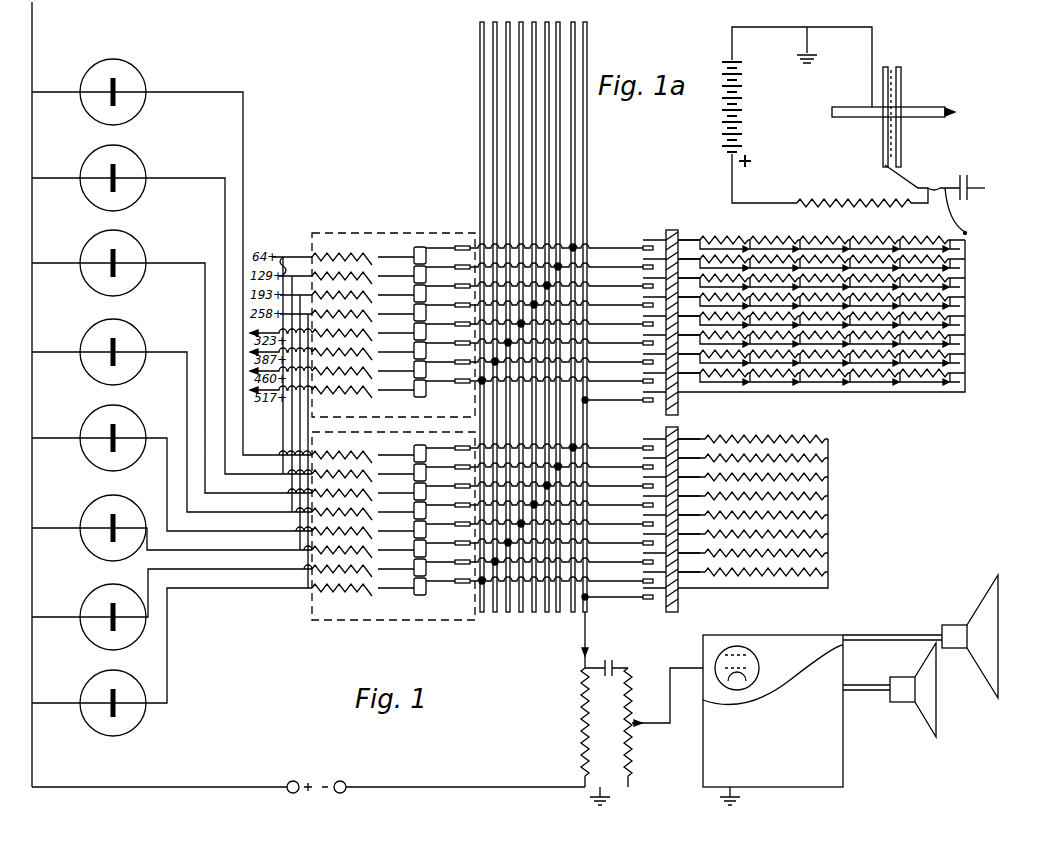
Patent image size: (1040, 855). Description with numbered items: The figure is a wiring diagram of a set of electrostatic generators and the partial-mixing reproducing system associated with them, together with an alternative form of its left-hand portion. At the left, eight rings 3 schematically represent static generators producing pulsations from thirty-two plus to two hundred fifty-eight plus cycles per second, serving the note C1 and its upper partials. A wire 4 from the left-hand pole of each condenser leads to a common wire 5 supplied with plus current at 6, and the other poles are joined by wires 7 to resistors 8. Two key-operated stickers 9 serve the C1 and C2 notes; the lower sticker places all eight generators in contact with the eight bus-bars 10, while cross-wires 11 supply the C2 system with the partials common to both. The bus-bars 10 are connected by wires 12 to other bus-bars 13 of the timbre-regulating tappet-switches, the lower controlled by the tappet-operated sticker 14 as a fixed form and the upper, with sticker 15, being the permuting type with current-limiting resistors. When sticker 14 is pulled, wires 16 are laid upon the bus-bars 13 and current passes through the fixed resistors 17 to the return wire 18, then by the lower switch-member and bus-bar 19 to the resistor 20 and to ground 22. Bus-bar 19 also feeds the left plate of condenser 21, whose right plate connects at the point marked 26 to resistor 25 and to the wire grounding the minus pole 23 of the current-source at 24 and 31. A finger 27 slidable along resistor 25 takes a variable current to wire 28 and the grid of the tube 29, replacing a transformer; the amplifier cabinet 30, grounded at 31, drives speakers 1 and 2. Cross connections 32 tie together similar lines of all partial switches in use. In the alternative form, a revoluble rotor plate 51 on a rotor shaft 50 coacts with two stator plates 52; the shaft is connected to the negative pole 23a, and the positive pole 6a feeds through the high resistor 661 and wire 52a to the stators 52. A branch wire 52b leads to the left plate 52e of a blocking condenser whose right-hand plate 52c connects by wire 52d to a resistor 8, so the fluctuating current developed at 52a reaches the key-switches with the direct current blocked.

In FIG. 1, the speaker 1 is at (920, 636).
In FIG. 1, the speaker 2 is at (889, 690).
In FIG. 1, the rings representing static generators 3 is at (136, 82).
In FIG. 1, the wire 4 is at (172, 363).
In FIG. 1, the common wire 5 is at (30, 296).
In FIG. 1, the plus current supply 6 is at (319, 778).
In FIG. 1, the wires 7 is at (172, 440).
In FIG. 1, the resistors 8 is at (366, 254).
In FIG. 1, the key-operated stickers 9 is at (427, 431).
In FIG. 1, the bus-bars 10 is at (458, 448).
In FIG. 1, the cross-wires 11 is at (290, 418).
In FIG. 1, the wires 12 is at (561, 425).
In FIG. 1, the bus-bars 13 is at (638, 282).
In FIG. 1, the tappet-operated sticker 14 is at (676, 612).
In FIG. 1, the tappet-operated sticker 15 is at (676, 412).
In FIG. 1, the wires 16 is at (658, 527).
In FIG. 1, the fixed resistors 17 is at (798, 440).
In FIG. 1, the return wire 18 is at (826, 476).
In FIG. 1, the bus-bar 19 is at (585, 140).
In FIG. 1, the resistor 20 is at (580, 720).
In FIG. 1, the condenser 21 is at (612, 665).
In FIG. 1, the ground 22 is at (604, 793).
In FIG. 1, the minus pole of current-source 23 is at (308, 780).
In FIG. 1, the grounding point 24 is at (605, 771).
In FIG. 1, the resistor 25 is at (634, 733).
In FIG. 1, the resistance 26 is at (632, 668).
In FIG. 1, the finger 27 is at (666, 720).
In FIG. 1, the wire 28 is at (683, 655).
In FIG. 1, the tube 29 is at (749, 662).
In FIG. 1, the amplifier cabinet 30 is at (828, 748).
In FIG. 1, the ground 31 is at (734, 797).
In FIG. 1, the cross connections 32 is at (493, 130).
In FIG. 1A, the negative pole of power supply 23a is at (732, 30).
In FIG. 1A, the positive pole of power supply 6a is at (730, 165).
In FIG. 1A, the rotor shaft 50 is at (845, 110).
In FIG. 1A, the rotor plate 51 is at (901, 80).
In FIG. 1A, the stator plates 52 is at (885, 165).
In FIG. 1A, the wire 52a is at (928, 174).
In FIG. 1A, the branch wire 52b is at (981, 243).
In FIG. 1A, the right-hand plate of blocking condenser 52c is at (989, 197).
In FIG. 1A, the wire 52d is at (968, 178).
In FIG. 1A, the left plate of condenser 52e is at (971, 210).
In FIG. 1A, the high resistor 661 is at (858, 202).